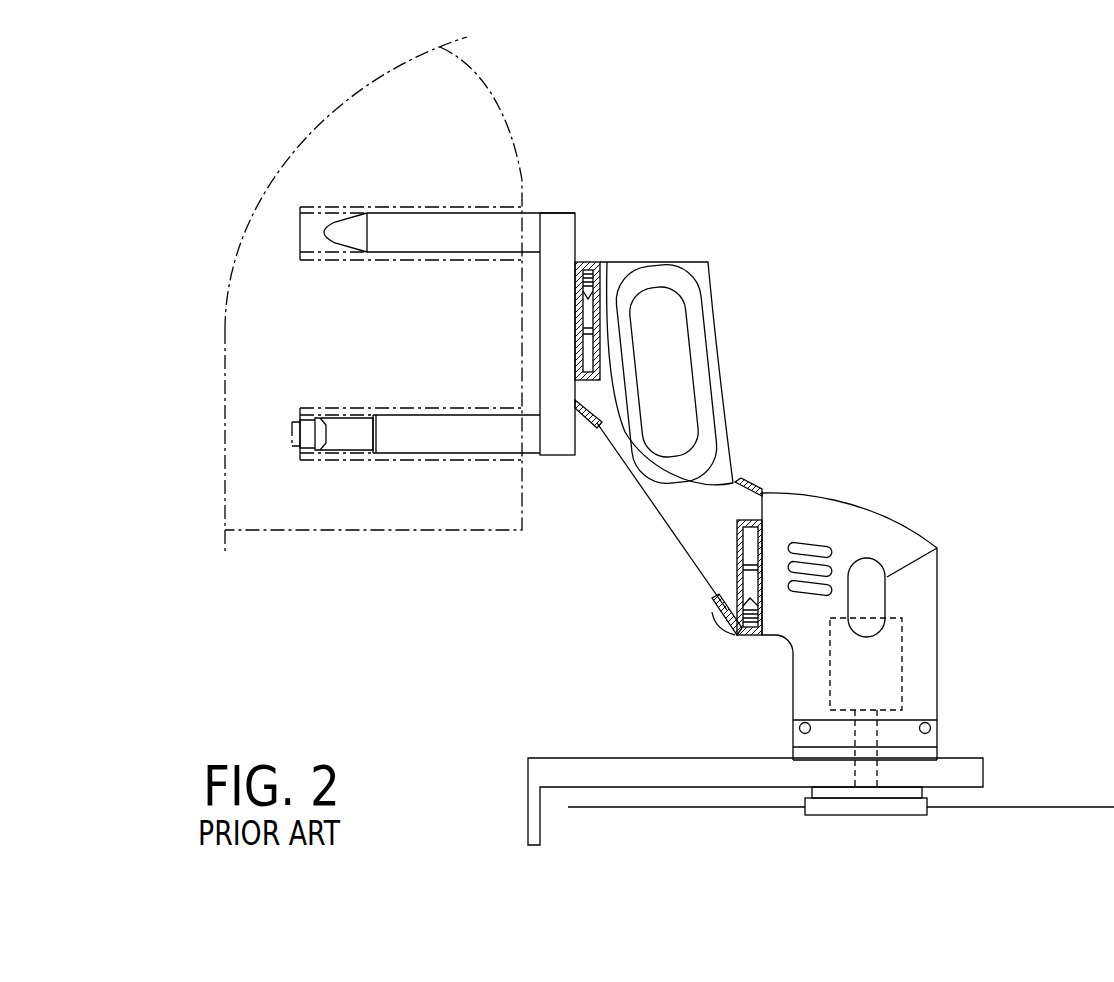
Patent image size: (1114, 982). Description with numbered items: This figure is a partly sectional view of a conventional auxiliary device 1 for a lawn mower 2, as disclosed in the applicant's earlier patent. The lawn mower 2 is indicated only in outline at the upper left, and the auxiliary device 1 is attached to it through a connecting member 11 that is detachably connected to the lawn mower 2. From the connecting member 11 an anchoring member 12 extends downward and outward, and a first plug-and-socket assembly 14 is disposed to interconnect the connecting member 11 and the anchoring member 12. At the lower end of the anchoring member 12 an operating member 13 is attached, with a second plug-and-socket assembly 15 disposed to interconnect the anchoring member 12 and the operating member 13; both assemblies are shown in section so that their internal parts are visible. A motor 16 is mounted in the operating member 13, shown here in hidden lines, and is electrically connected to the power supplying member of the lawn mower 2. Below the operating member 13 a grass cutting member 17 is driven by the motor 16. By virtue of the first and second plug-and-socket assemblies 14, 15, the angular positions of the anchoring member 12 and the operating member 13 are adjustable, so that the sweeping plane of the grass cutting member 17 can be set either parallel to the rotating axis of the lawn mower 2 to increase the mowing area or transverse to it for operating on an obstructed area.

The auxiliary device 1 is at (810, 480).
The lawn mower 2 is at (265, 122).
The connecting member 11 is at (531, 223).
The anchoring member 12 is at (704, 360).
The operating member 13 is at (922, 580).
The first plug-and-socket assembly 14 is at (591, 256).
The second plug-and-socket assembly 15 is at (741, 617).
The motor 16 is at (887, 677).
The grass cutting member 17 is at (1017, 808).